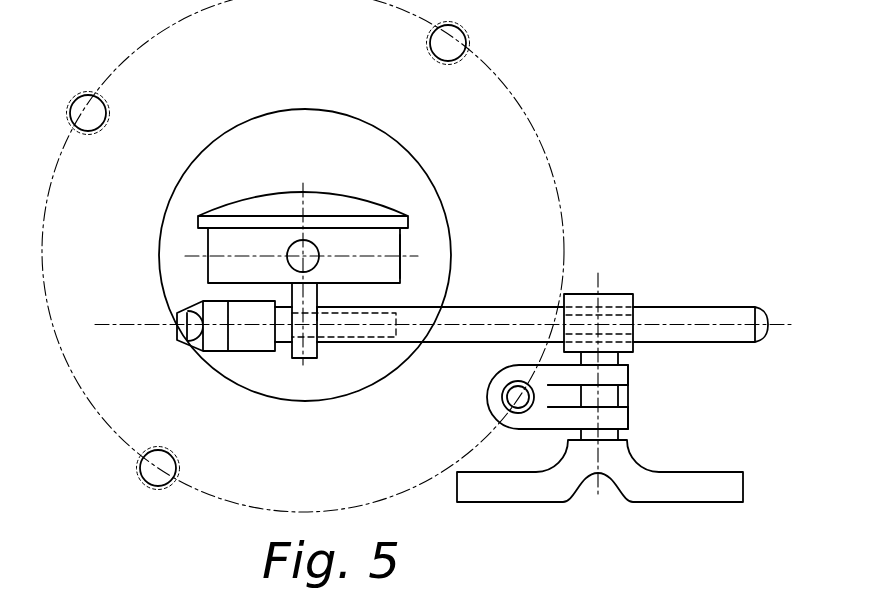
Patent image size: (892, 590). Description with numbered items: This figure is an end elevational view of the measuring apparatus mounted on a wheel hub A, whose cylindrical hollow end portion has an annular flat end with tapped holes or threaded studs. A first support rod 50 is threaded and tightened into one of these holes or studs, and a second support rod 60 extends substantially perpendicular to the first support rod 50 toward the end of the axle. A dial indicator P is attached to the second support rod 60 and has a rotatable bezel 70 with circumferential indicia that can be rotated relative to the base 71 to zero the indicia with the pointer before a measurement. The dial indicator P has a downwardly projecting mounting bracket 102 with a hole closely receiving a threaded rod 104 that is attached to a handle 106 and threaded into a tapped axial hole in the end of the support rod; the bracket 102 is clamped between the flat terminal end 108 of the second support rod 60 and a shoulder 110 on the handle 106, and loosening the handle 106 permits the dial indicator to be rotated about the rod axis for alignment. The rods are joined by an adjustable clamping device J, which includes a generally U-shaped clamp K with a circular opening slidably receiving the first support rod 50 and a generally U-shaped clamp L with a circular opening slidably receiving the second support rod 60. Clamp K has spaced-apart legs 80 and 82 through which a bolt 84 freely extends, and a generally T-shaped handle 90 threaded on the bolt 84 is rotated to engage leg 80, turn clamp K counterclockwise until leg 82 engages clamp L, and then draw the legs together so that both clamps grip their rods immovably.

The wheel hub A is at (564, 202).
The dial indicator P is at (405, 242).
The generally U-shaped clamp L is at (624, 293).
The adjustable clamping device J is at (650, 392).
The generally U-shaped clamp K is at (511, 433).
The first support rod 50 is at (487, 378).
The second support rod 60 is at (705, 310).
The rotatable bezel 70 is at (348, 200).
The base 71 is at (393, 266).
The leg 80 is at (630, 418).
The leg 82 is at (630, 378).
The bolt 84 is at (615, 433).
The generally T-shaped handle 90 is at (718, 494).
The mounting bracket 102 is at (297, 350).
The threaded rod 104 is at (342, 343).
The handle 106 is at (213, 340).
The flat terminal end 108 is at (320, 304).
The shoulder 110 is at (290, 305).